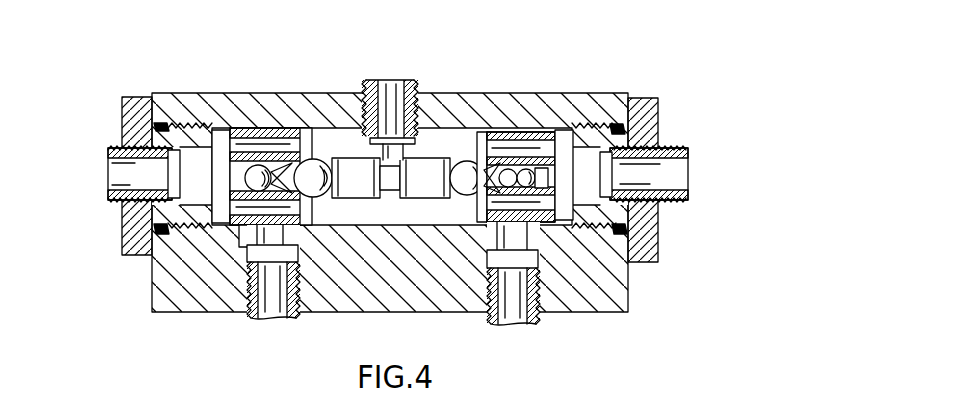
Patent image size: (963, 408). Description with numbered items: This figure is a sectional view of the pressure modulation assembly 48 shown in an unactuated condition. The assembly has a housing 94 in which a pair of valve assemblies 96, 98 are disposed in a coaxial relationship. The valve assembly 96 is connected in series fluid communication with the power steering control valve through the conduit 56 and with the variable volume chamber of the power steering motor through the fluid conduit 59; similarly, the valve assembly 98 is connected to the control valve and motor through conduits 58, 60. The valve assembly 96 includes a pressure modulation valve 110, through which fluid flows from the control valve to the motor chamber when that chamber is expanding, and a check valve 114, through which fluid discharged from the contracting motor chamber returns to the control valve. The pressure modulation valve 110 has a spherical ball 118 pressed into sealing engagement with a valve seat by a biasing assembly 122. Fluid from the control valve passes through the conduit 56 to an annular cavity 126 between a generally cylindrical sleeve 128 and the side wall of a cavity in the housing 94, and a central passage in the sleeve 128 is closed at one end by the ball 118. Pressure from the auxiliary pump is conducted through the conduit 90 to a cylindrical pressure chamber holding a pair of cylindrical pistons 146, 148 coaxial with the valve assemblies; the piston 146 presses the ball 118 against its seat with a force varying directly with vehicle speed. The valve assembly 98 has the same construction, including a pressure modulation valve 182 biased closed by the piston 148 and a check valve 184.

The pressure modulation assembly 48 is at (634, 50).
The conduit 56 is at (300, 316).
The conduit 58 is at (540, 316).
The fluid conduit 59 is at (115, 148).
The conduit 60 is at (673, 210).
The conduit 90 is at (363, 84).
The housing 94 is at (158, 300).
The valve assembly 96 is at (270, 92).
The valve assembly 98 is at (532, 120).
The pressure modulation valve 110 is at (309, 128).
The check valve 114 is at (247, 160).
The spherical ball 118 is at (340, 158).
The biasing assembly 122 is at (432, 130).
The annular cavity 126 is at (296, 230).
The cylindrical sleeve 128 is at (233, 232).
The cylindrical piston 146 is at (318, 200).
The cylindrical piston 148 is at (406, 200).
The pressure modulation valve 182 is at (463, 218).
The check valve 184 is at (536, 208).